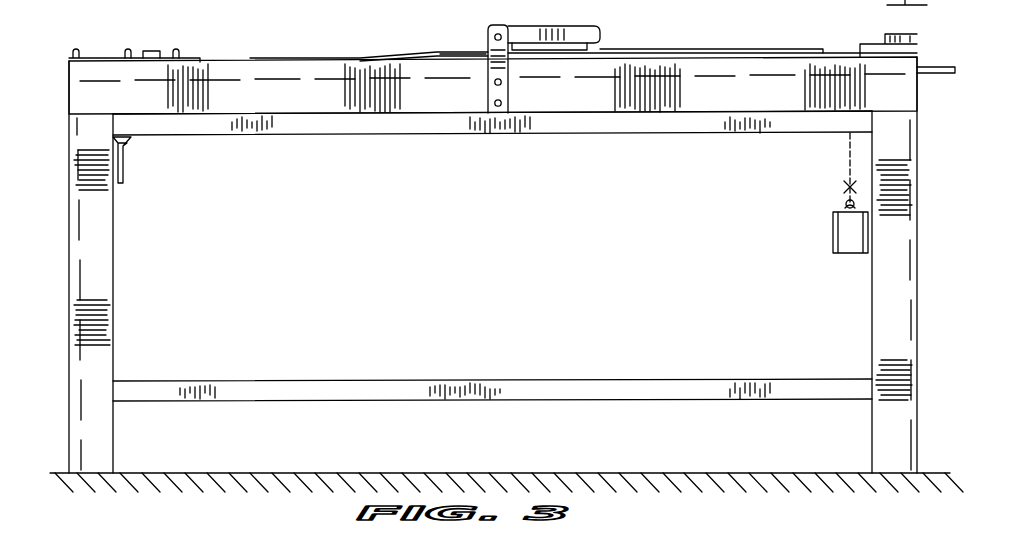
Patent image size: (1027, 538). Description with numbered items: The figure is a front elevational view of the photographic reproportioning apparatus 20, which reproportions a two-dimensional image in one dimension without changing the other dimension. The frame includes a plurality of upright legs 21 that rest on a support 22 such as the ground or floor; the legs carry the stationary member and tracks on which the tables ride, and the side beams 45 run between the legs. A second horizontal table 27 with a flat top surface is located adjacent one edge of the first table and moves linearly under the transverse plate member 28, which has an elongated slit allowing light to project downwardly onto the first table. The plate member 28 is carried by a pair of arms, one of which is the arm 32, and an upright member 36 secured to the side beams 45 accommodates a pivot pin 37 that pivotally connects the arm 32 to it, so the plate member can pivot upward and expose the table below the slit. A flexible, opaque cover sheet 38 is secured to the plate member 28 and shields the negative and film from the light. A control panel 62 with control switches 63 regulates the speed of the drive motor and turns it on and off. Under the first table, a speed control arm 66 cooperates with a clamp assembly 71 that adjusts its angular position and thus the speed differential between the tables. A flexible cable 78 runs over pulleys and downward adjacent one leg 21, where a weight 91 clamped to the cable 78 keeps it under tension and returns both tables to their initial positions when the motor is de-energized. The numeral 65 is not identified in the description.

The photographic reproportioning apparatus 20 is at (118, 37).
The upright legs 21 is at (103, 286).
The support 22 is at (385, 464).
The second horizontal table 27 is at (795, 52).
The transverse plate member 28 is at (590, 48).
The arm 32 is at (583, 30).
The upright member 36 is at (494, 25).
The pivot pin 37 is at (490, 0).
The cover sheet 38 is at (366, 57).
The side beams 45 is at (640, 128).
The control panel 62 is at (92, 51).
The control switches 63 is at (160, 50).
The head beam 65 is at (199, 5).
The speed control arm 66 is at (937, 67).
The clamp assembly 71 is at (860, 28).
The flexible cable 78 is at (850, 150).
The weight 91 is at (835, 240).